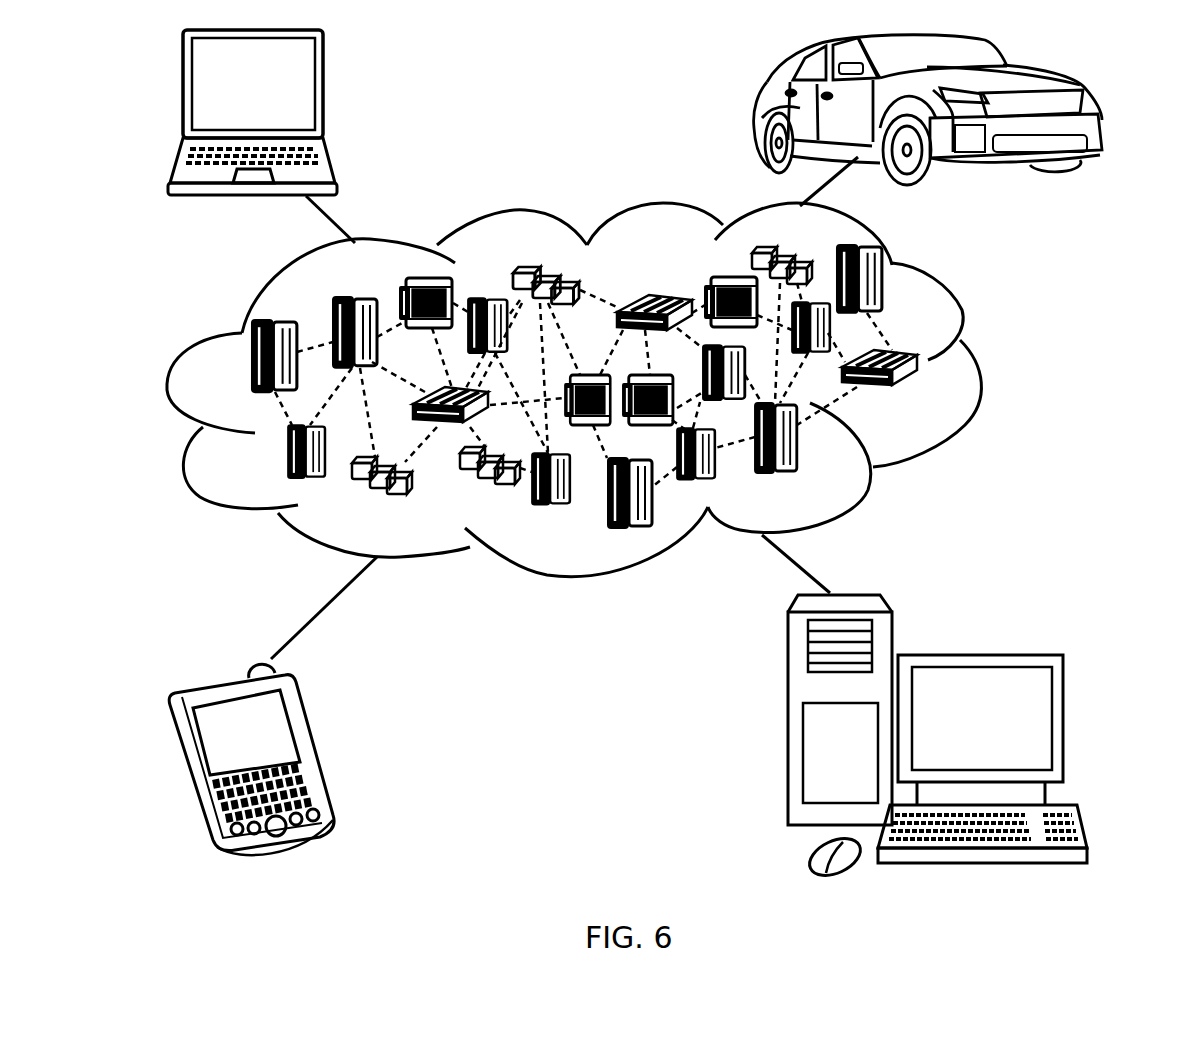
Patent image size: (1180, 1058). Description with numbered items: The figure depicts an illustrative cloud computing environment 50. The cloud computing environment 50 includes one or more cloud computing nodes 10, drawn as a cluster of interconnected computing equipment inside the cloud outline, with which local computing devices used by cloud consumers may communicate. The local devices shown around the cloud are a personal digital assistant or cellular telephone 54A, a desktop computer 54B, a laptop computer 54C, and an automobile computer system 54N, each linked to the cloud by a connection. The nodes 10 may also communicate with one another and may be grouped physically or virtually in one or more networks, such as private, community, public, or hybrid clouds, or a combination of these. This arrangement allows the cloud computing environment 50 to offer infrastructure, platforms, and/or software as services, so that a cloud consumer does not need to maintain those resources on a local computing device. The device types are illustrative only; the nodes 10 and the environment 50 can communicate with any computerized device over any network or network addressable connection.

The cloud computing node 10 is at (928, 398).
The cloud computing environment 50 is at (968, 364).
The personal digital assistant or cellular telephone 54A is at (313, 747).
The desktop computer 54B is at (977, 653).
The laptop computer 54C is at (323, 93).
The automobile computer system 54N is at (757, 110).